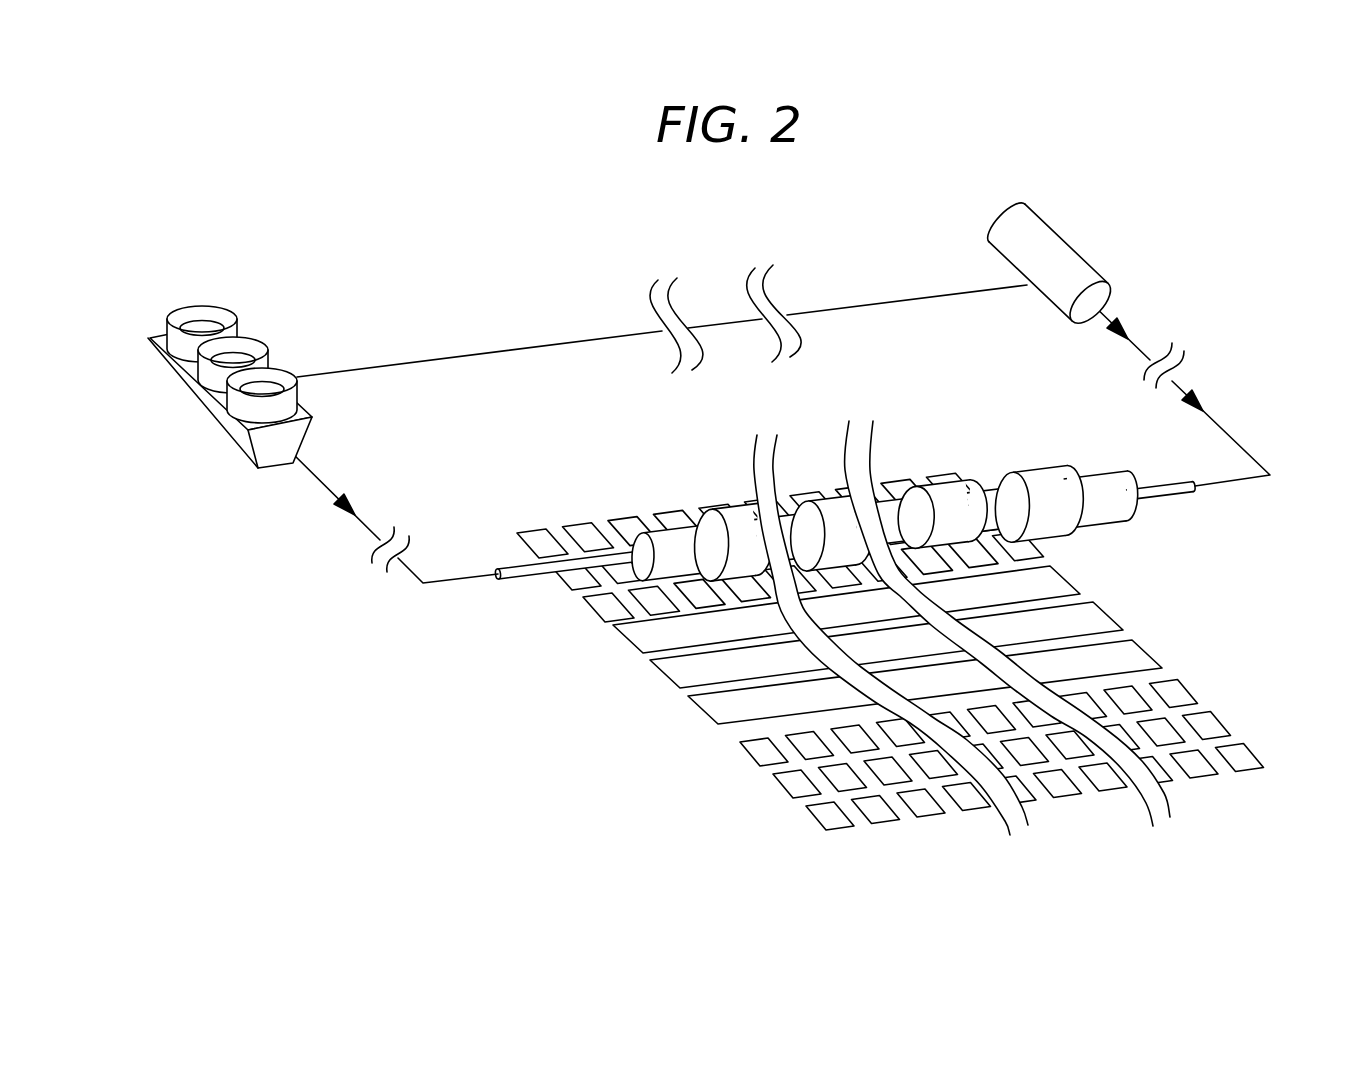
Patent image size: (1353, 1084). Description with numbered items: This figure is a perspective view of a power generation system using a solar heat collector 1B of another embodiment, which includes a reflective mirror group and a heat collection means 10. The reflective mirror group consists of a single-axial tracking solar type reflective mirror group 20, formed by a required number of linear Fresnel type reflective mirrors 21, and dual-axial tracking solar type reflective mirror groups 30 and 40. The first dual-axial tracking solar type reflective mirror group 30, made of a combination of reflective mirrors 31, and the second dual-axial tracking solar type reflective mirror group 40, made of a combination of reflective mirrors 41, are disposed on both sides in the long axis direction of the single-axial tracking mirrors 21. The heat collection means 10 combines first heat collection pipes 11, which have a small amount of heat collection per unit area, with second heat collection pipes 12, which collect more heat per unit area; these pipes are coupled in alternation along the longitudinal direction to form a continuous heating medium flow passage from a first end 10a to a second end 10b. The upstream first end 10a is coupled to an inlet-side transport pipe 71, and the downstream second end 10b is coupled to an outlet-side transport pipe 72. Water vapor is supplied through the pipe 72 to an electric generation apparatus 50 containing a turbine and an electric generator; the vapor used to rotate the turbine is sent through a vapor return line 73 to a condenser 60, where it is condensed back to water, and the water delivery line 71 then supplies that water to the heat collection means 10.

The solar heat collector 1B is at (907, 472).
The heat collection means 10 is at (907, 472).
The first end 10a is at (640, 555).
The second end 10b is at (1130, 475).
The first heat collection pipes 11 is at (680, 538).
The second heat collection pipes 12 is at (825, 510).
The single-axial tracking solar type reflective mirror group 20 is at (914, 658).
The linear Fresnel type reflective mirrors 21 is at (727, 705).
The first dual-axial tracking solar type reflective mirror group 30 is at (992, 657).
The reflective mirrors 31 is at (1200, 723).
The second dual-axial tracking solar type reflective mirror group 40 is at (776, 532).
The reflective mirrors 41 is at (543, 538).
The electric generation apparatus 50 is at (1057, 230).
The condenser 60 is at (215, 413).
The inlet-side transport pipe 71 is at (363, 527).
The outlet-side transport pipe 72 is at (1140, 347).
The vapor return line 73 is at (462, 355).